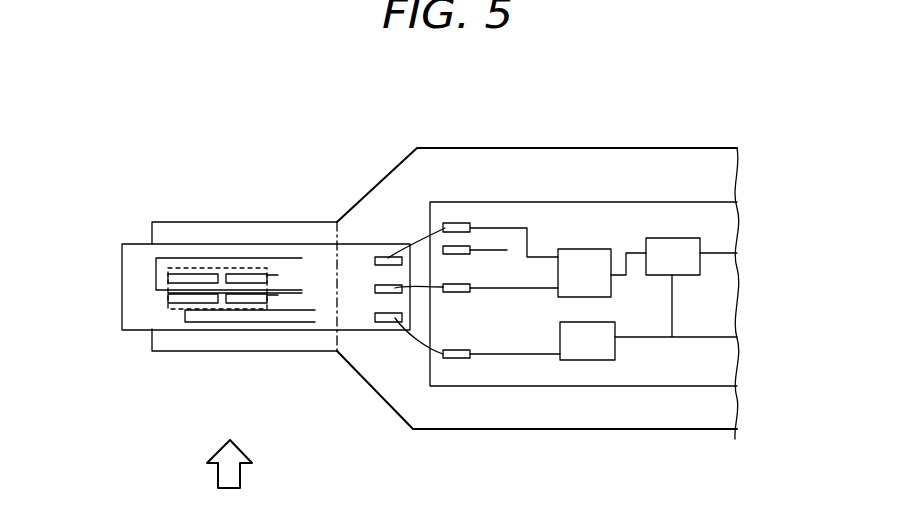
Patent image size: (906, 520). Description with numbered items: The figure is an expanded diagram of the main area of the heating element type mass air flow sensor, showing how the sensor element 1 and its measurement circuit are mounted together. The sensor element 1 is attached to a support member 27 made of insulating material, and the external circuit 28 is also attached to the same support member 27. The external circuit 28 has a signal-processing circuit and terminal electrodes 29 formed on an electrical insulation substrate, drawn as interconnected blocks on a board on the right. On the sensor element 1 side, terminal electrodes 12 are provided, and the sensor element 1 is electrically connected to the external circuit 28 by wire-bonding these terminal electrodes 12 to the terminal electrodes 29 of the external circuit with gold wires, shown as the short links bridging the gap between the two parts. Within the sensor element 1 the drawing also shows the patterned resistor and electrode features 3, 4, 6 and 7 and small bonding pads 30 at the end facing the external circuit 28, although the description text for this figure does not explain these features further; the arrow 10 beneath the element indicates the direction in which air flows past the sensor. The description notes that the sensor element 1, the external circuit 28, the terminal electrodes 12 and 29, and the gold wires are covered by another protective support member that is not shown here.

The sensor element 1 is at (113, 321).
The heating resistor 3 is at (180, 268).
The temperature measuring resistor 4 is at (213, 294).
The upstream temperature measuring resistor 6 is at (208, 290).
The downstream temperature measuring resistor 7 is at (187, 312).
The air flow direction 10 is at (226, 473).
The terminal electrodes 12 is at (383, 322).
The support member 27 is at (633, 186).
The external circuit 28 is at (713, 229).
The terminal electrodes 29 is at (462, 222).
The electrode pad 30 is at (417, 240).